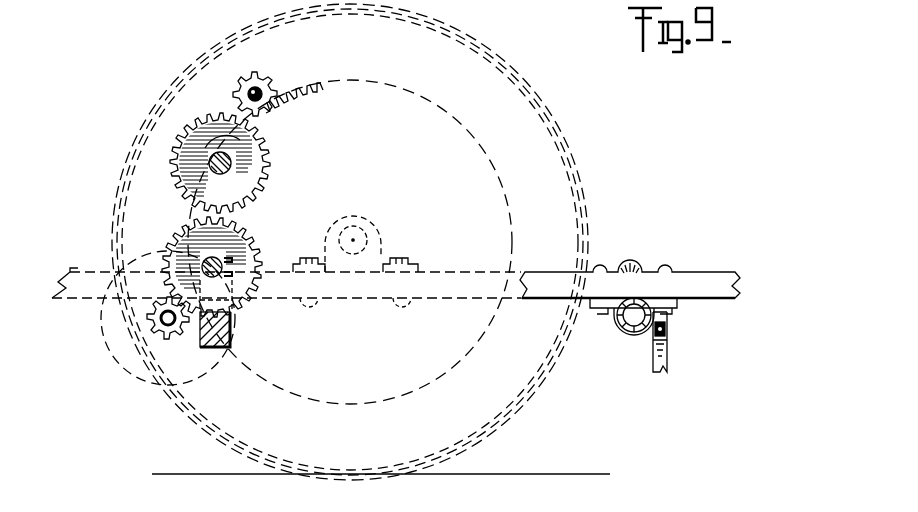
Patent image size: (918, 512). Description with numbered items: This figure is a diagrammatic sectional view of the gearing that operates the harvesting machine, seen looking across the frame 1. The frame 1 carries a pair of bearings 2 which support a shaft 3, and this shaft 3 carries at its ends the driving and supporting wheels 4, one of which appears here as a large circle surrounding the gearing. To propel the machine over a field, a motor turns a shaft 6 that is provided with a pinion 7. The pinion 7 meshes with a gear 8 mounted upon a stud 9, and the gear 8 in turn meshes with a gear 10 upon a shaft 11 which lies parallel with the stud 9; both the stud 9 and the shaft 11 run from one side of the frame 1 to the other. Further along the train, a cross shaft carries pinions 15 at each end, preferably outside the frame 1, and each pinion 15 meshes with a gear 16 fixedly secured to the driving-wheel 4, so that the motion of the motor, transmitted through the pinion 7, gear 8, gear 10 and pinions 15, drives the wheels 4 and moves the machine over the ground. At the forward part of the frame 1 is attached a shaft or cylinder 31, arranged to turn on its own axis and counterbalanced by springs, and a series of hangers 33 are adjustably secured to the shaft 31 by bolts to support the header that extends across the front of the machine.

The frame 1 is at (82, 272).
The bearings 2 is at (385, 246).
The shaft 3 is at (364, 232).
The driving and supporting wheels 4 is at (590, 156).
The shaft 6 is at (158, 335).
The pinion 7 is at (180, 333).
The gear 8 is at (250, 265).
The stud 9 is at (226, 252).
The gear 10 is at (262, 178).
The shaft 11 is at (206, 170).
The pinions 15 is at (265, 85).
The gears 16 is at (322, 84).
The shaft or cylinder 31 is at (634, 318).
The hangers 33 is at (668, 352).